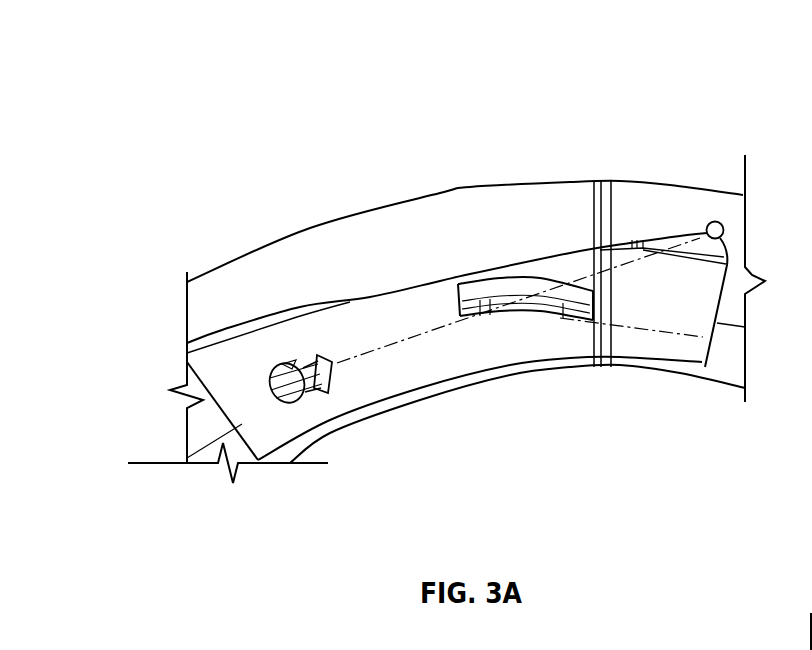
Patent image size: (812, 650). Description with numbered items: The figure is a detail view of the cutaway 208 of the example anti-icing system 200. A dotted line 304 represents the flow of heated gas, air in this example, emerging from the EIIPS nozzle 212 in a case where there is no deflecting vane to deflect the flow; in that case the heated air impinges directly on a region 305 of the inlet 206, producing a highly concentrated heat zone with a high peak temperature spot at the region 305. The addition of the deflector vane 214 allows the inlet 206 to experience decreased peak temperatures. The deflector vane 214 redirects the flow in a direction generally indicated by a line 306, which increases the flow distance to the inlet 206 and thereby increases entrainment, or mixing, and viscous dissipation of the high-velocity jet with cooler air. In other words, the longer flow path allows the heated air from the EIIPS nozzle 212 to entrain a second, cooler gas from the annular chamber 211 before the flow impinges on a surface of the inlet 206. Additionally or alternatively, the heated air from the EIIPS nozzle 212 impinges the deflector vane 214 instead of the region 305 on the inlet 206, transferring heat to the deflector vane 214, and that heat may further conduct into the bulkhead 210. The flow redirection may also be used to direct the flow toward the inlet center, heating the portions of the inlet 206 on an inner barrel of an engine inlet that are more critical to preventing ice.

The anti-icing system 200 is at (208, 92).
The inlet 206 is at (585, 212).
The cutaway 208 is at (518, 262).
The bulkhead 210 is at (280, 418).
The annular chamber 211 is at (362, 313).
The EIIPS nozzle 212 is at (290, 362).
The deflector vane 214 is at (550, 296).
The dotted line 304 is at (440, 327).
The region 305 is at (724, 228).
The line 306 is at (670, 333).